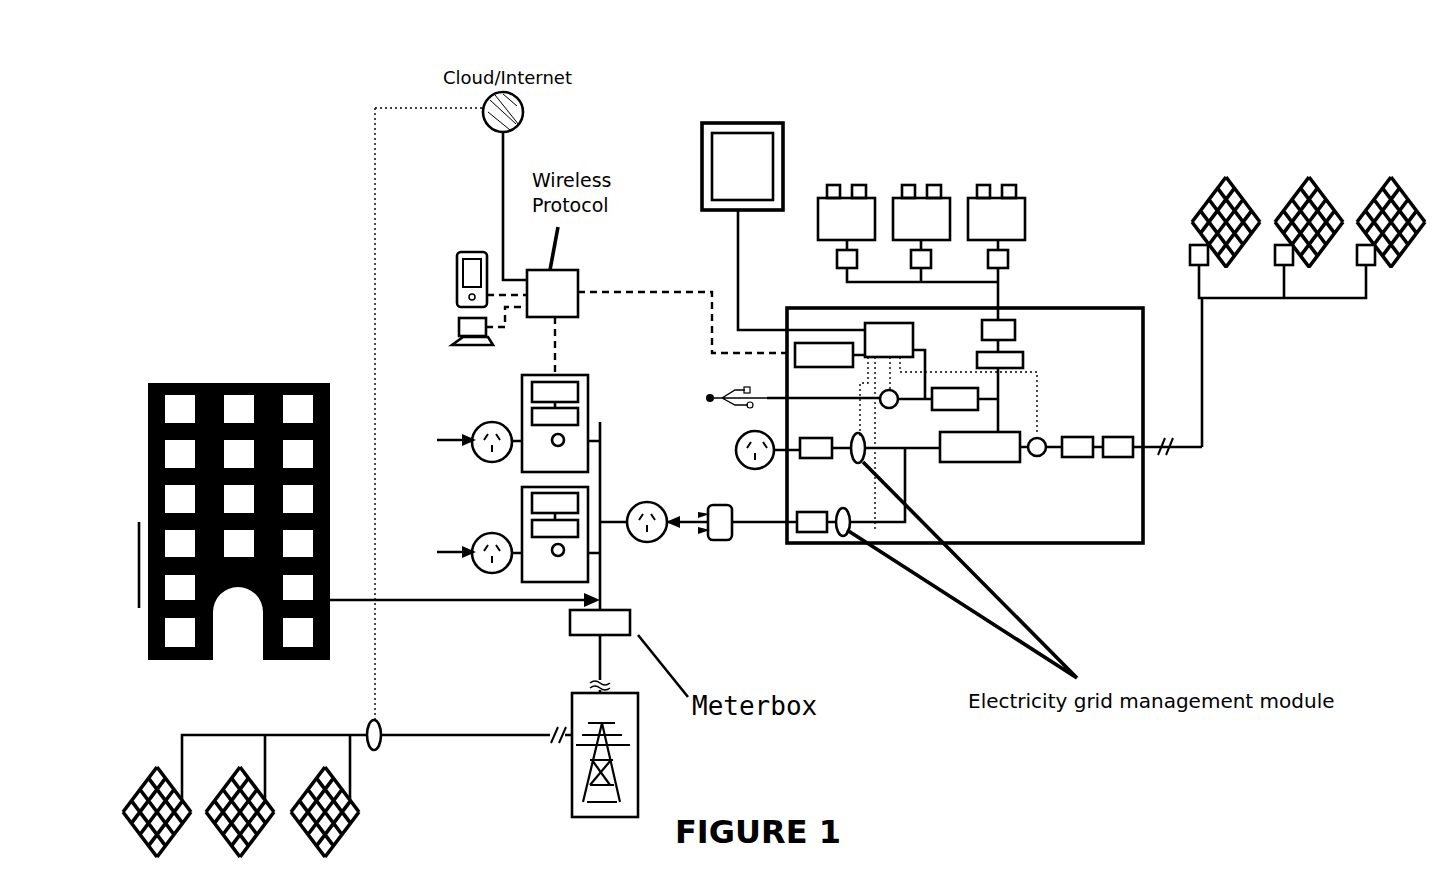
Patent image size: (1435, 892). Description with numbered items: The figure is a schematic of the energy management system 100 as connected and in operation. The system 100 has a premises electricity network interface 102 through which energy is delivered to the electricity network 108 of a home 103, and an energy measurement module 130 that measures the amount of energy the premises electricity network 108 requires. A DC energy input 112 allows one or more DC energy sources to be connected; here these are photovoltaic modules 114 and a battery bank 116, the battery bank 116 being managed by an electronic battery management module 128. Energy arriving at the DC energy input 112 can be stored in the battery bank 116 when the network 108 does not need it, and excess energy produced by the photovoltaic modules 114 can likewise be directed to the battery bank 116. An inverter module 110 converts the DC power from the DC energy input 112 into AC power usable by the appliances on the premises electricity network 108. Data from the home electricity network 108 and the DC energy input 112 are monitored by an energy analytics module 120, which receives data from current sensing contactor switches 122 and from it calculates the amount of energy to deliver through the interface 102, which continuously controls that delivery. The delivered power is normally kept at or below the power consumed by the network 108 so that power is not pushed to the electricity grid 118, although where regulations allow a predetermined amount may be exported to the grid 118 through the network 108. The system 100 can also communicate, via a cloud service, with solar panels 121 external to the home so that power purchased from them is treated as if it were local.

The energy management system 100 is at (1080, 283).
The premises electricity network interface 102 is at (818, 452).
The home 103 is at (217, 367).
The home electricity network 108 is at (700, 110).
The inverter module 110 is at (978, 455).
The DC energy input 112 is at (1125, 418).
The photovoltaic modules 114 is at (1285, 160).
The battery bank 116 is at (915, 165).
The electricity grid 118 is at (613, 805).
The energy analytics module 120 is at (868, 318).
The solar panels 121 is at (378, 795).
The current sensing contactor switches 122 is at (588, 513).
The electronic battery management module 128 is at (1010, 248).
The energy measurement module 130 is at (813, 352).